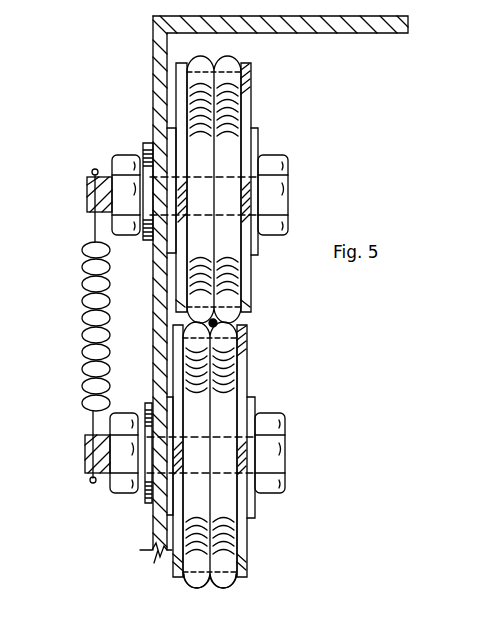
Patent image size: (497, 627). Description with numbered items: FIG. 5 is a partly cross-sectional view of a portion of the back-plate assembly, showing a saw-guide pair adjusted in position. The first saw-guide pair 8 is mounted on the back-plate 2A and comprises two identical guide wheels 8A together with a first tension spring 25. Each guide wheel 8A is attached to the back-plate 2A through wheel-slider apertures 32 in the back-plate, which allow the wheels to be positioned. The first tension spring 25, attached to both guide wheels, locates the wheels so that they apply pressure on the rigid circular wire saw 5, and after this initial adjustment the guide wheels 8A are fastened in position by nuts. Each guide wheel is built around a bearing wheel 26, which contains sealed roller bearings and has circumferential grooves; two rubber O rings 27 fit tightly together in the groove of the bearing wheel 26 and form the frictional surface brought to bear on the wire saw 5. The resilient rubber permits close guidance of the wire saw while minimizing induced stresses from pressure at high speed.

The back-plate 2A is at (373, 33).
The rigid circular wire saw 5 is at (218, 322).
The 1st saw-guide pair 8 is at (280, 157).
The guide wheel 8A is at (253, 95).
The 1st tension spring 25 is at (81, 240).
The bearing wheel 26 is at (245, 557).
The rubber O rings 27 is at (190, 583).
The wheel-slider apertures 32 is at (165, 135).